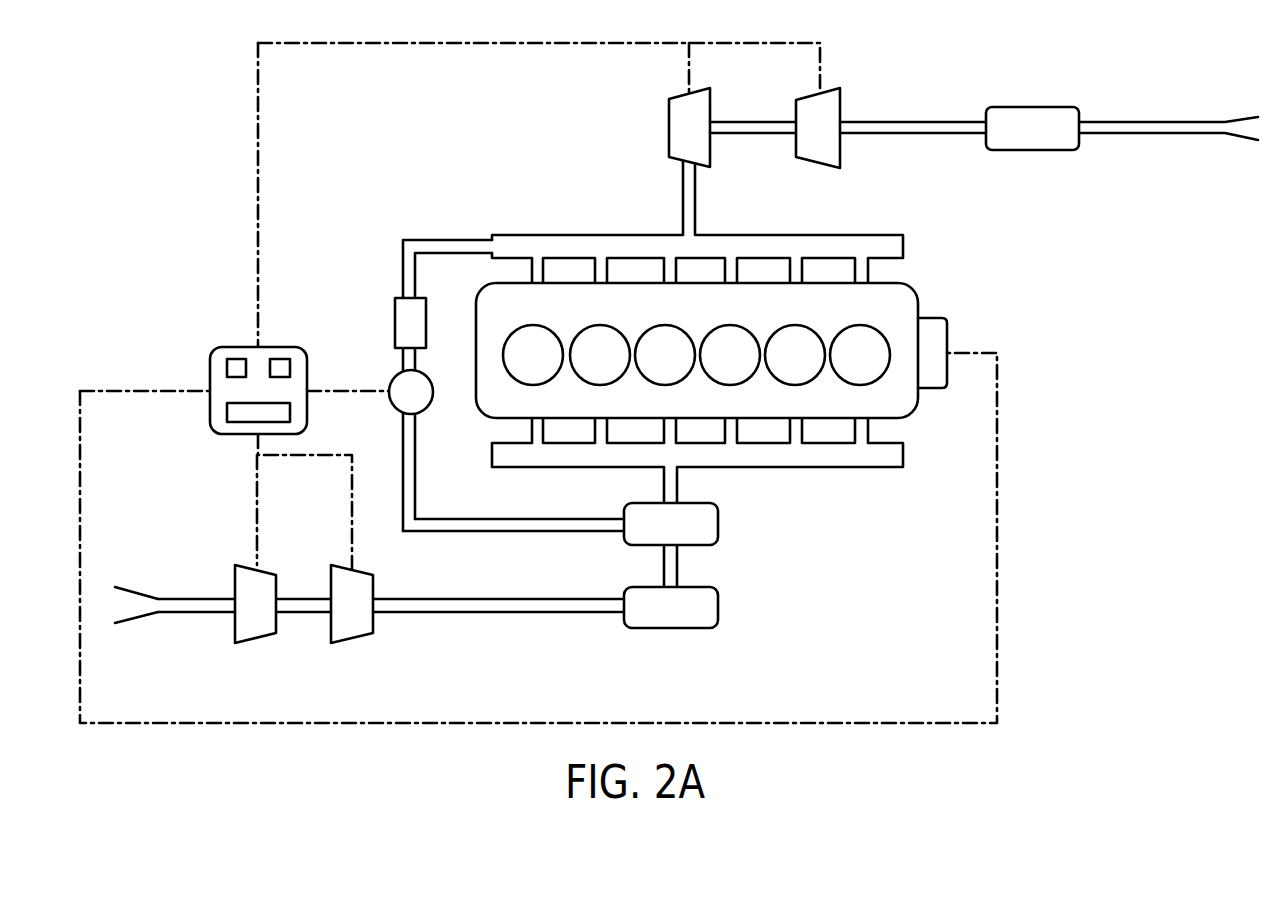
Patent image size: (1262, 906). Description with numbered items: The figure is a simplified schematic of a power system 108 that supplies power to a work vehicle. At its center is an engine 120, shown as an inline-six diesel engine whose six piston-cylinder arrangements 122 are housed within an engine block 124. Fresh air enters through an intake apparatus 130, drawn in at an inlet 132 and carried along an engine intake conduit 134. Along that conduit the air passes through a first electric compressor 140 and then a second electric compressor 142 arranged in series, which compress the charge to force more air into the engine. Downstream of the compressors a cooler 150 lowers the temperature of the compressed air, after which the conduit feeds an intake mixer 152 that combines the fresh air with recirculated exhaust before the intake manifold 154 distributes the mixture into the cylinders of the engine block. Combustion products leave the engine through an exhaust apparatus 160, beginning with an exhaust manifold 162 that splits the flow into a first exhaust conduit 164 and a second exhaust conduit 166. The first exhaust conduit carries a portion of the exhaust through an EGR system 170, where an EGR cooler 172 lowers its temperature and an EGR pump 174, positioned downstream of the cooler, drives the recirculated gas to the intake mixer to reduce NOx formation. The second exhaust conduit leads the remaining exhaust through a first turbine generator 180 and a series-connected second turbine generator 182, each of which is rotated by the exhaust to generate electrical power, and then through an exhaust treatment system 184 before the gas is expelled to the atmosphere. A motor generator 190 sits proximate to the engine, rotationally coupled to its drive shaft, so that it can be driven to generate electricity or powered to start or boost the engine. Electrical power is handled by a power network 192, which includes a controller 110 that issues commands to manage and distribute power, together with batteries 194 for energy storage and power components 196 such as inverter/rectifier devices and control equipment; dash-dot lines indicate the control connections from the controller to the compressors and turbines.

The power system 108 is at (203, 149).
The controller 110 is at (221, 369).
The engine 120 is at (742, 345).
The piston-cylinder arrangements 122 is at (797, 326).
The engine block 124 is at (898, 397).
The intake apparatus 130 is at (369, 616).
The inlet 132 is at (140, 592).
The engine intake conduit 134 is at (456, 614).
The first electric compressor 140 is at (255, 643).
The second electric compressor 142 is at (352, 643).
The cooler 150 is at (718, 606).
The intake mixer 152 is at (718, 524).
The intake manifold 154 is at (868, 470).
The exhaust apparatus 160 is at (925, 114).
The exhaust manifold 162 is at (781, 233).
The first exhaust conduit 164 is at (455, 240).
The second exhaust conduit 166 is at (916, 137).
The exhaust gas recirculation (EGR) system 170 is at (374, 333).
The EGR cooler 172 is at (394, 326).
The EGR pump 174 is at (390, 412).
The first turbine generator 180 is at (668, 128).
The second turbine generator 182 is at (842, 102).
The exhaust treatment system 184 is at (1037, 107).
The motor generator 190 is at (947, 335).
The power network 192 is at (210, 368).
The batteries 194 is at (278, 358).
The power components 196 is at (243, 434).